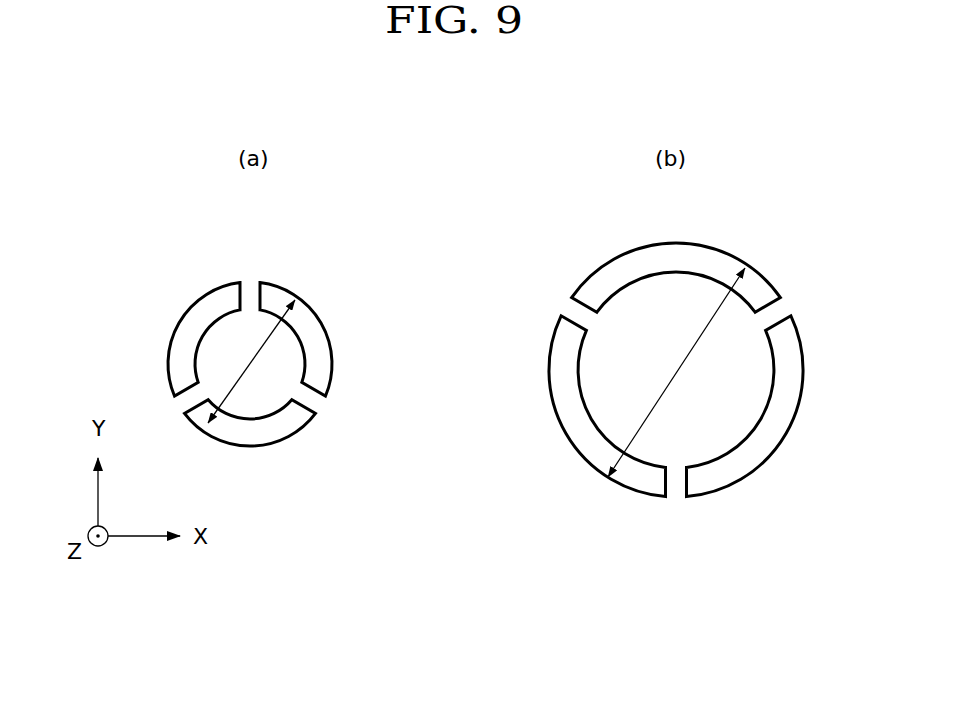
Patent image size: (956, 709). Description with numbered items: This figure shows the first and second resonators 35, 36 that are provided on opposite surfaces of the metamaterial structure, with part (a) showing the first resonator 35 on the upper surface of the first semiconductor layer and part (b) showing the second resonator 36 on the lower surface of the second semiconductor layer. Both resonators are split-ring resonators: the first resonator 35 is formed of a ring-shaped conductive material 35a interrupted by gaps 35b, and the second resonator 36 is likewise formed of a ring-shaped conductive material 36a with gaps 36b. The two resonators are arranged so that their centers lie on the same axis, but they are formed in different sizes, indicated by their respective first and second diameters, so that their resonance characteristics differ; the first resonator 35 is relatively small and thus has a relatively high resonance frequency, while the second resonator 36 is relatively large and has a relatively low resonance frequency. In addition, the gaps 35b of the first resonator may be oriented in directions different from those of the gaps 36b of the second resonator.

The first resonator 35 is at (160, 297).
The conductive material 35a is at (328, 366).
The gaps 35b is at (314, 399).
The second resonator 36 is at (550, 285).
The conductive material 36a is at (762, 285).
The gaps 36b is at (778, 311).